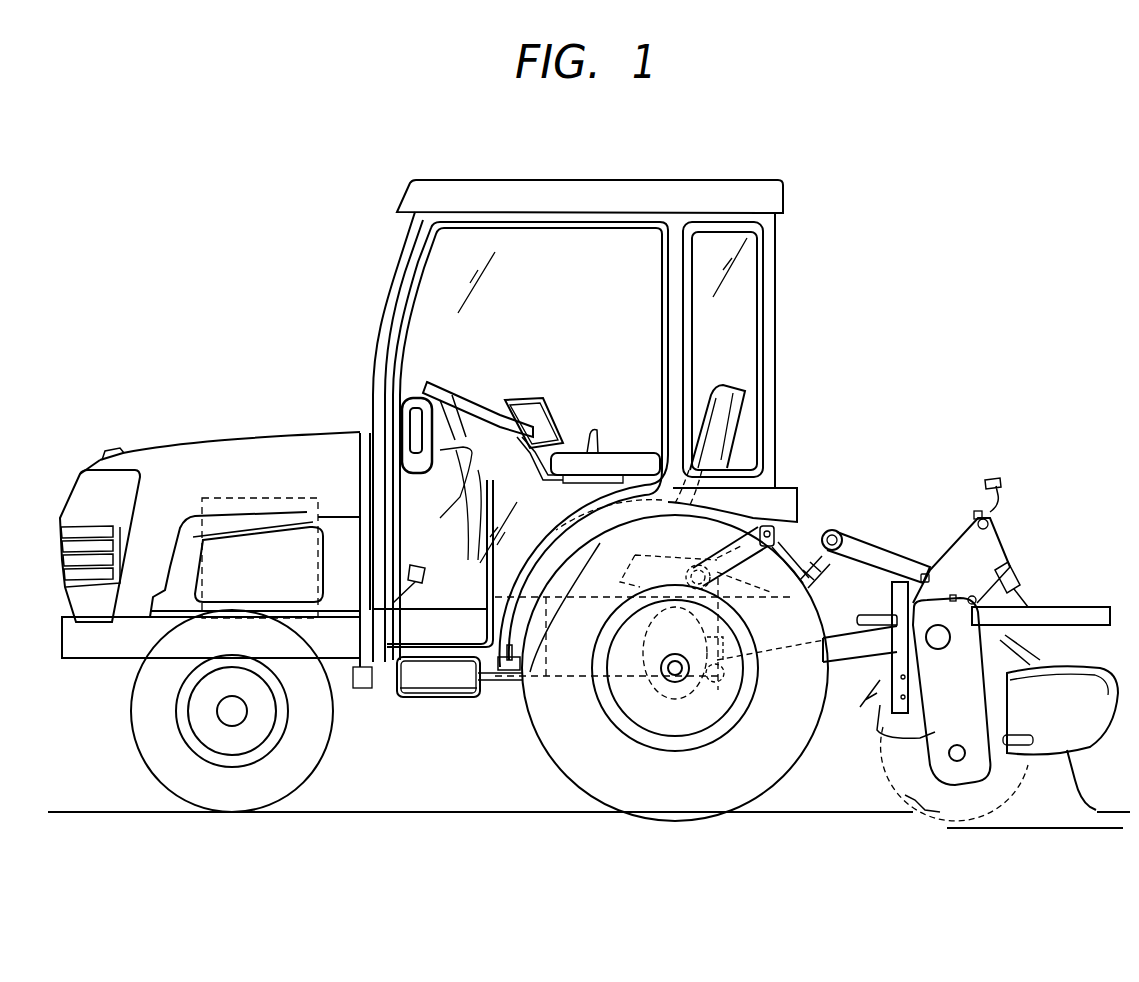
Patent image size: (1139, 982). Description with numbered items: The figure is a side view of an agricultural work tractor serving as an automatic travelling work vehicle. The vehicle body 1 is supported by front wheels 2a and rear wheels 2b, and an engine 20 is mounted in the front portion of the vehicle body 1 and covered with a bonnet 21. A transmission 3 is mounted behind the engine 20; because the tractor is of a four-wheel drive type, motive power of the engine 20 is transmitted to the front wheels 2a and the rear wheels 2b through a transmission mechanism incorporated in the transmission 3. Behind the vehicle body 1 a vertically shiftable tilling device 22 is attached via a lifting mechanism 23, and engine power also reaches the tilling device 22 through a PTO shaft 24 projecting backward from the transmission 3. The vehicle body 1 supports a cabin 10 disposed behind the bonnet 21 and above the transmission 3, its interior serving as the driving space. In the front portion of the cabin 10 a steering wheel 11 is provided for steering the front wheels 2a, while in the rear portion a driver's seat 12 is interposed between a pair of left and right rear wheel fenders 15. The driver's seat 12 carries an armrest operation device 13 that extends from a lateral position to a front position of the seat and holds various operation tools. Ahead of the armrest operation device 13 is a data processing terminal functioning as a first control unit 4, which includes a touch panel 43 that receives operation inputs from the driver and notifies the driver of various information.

The vehicle body 1 is at (97, 663).
The front wheels 2a is at (160, 780).
The rear wheels 2b is at (560, 778).
The transmission 3 is at (550, 680).
The first control unit 4 is at (550, 403).
The touch panel 43 is at (527, 412).
The cabin 10 is at (407, 258).
The steering wheel 11 is at (477, 398).
The driver's seat 12 is at (733, 387).
The armrest operation device 13 is at (628, 449).
The rear wheel fenders 15 is at (790, 500).
The engine 20 is at (272, 497).
The bonnet 21 is at (172, 456).
The tilling device 22 is at (1067, 553).
The lifting mechanism 23 is at (860, 531).
The PTO shaft 24 is at (806, 672).